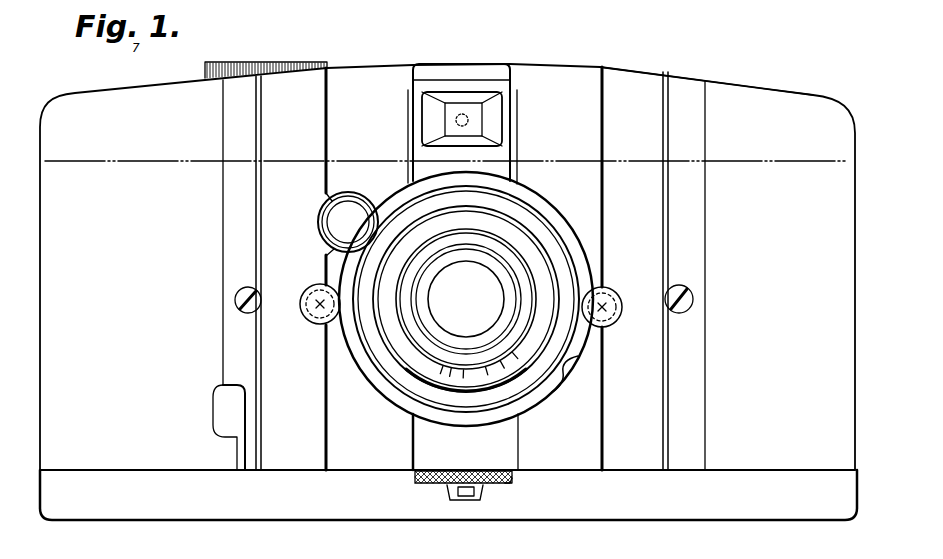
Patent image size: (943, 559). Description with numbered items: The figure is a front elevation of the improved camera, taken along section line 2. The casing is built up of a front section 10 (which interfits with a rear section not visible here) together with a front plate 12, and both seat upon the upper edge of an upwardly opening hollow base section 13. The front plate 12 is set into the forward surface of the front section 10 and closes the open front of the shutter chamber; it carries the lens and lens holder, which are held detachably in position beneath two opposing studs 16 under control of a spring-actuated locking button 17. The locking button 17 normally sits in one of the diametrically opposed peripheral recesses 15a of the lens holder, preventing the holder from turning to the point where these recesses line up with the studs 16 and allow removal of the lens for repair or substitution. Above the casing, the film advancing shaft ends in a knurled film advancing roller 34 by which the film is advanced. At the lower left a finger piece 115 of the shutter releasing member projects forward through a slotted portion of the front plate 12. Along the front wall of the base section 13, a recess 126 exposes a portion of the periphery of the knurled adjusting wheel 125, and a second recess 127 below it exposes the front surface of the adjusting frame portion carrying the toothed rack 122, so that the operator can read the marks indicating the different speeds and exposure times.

The front section 10 is at (447, 267).
The section line 2- 2 is at (446, 151).
The front plate 12 is at (644, 81).
The base section 13 is at (752, 511).
The knurled film advancing roller 34 is at (205, 72).
The spring-actuated locking button 17 is at (342, 221).
The studs 16 is at (318, 309).
The peripheral recesses 15a is at (466, 299).
The finger piece 115 is at (222, 400).
The recess 126 is at (415, 476).
The toothed rack 122 is at (449, 492).
The knurled adjusting wheel 125 is at (509, 484).
The second recess 127 is at (482, 497).